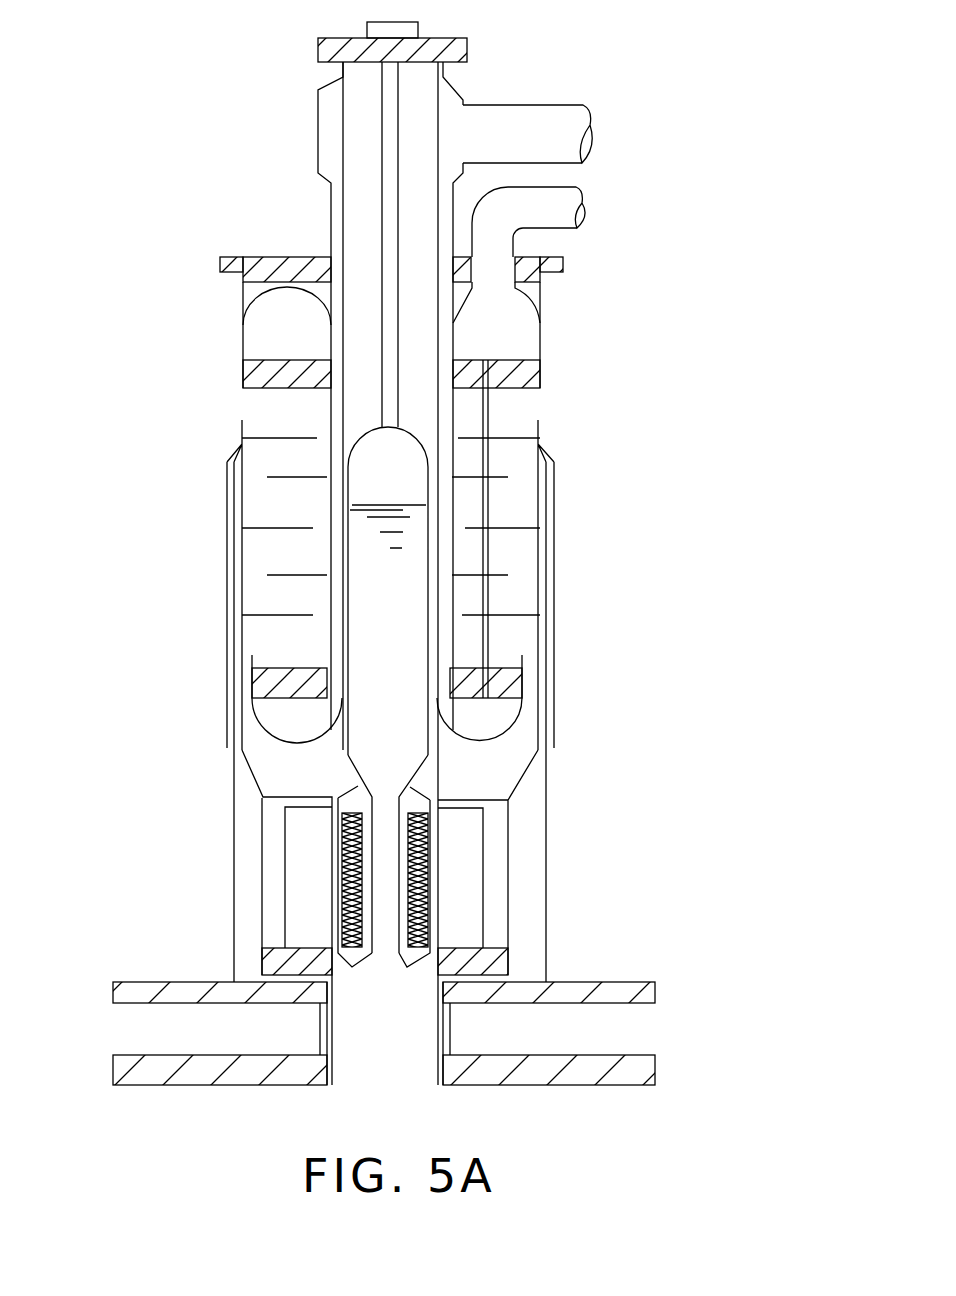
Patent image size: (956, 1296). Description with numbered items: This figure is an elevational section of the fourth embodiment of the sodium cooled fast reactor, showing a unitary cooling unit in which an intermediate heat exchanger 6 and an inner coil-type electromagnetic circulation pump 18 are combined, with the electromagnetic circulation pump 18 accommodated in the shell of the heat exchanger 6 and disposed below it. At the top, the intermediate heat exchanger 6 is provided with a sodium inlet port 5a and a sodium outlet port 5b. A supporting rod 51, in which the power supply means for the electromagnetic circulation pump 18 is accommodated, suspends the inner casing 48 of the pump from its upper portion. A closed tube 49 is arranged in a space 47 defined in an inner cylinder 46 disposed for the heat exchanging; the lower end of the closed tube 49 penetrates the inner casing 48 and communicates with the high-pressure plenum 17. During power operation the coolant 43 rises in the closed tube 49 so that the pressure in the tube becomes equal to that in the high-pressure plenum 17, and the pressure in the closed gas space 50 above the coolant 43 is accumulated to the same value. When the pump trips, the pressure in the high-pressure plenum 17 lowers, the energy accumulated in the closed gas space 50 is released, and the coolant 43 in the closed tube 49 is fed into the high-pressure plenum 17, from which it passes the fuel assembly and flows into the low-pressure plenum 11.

The supporting rod 51 is at (388, 160).
The sodium inlet port 5a is at (549, 117).
The sodium outlet port 5b is at (557, 198).
The space 47 is at (356, 407).
The closed gas space 50 is at (370, 468).
The coolant 43 is at (361, 552).
The inner cylinder 46 is at (336, 598).
The closed tube 49 is at (340, 722).
The inner casing 48 is at (345, 880).
The electromagnetic circulation pump 18 is at (497, 856).
The intermediate heat exchanger 6 is at (513, 512).
The low-pressure plenum 11 is at (646, 610).
The high-pressure plenum 17 is at (400, 1053).